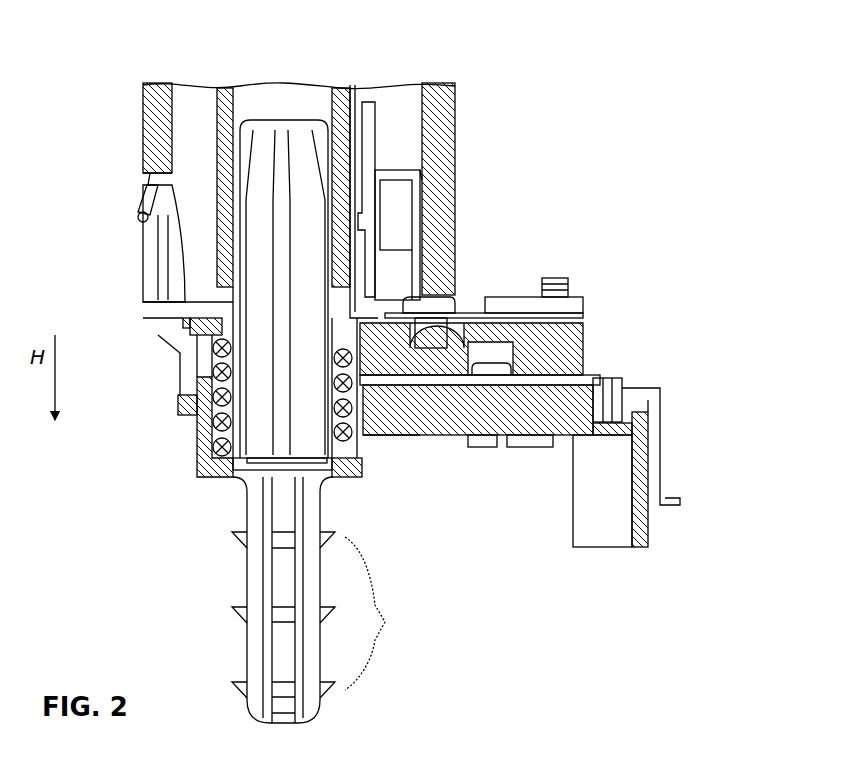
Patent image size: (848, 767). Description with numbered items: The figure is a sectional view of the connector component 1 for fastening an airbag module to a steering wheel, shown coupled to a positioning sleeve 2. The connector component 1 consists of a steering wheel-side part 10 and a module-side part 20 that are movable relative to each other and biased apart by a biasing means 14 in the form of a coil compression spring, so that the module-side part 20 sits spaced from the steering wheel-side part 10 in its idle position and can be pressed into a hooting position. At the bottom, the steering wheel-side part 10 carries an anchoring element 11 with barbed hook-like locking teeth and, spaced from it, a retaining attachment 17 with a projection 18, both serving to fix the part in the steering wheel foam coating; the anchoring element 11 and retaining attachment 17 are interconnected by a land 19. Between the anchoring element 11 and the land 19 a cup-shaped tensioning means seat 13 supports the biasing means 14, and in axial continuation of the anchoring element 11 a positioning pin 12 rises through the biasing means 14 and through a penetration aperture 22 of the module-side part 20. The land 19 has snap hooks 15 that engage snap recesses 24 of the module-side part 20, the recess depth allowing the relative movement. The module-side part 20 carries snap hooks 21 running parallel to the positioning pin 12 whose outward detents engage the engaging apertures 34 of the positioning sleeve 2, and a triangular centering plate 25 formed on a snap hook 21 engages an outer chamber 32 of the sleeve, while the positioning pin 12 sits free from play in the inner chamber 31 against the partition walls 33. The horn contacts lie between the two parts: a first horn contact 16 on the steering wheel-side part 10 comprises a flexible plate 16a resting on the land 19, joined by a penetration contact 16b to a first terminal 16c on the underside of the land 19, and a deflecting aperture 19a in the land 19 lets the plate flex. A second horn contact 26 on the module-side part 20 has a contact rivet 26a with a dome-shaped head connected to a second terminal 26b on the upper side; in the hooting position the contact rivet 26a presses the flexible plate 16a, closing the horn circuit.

The connector component 1 is at (737, 230).
The positioning sleeve 2 is at (492, 92).
The steering wheel-side part 10 is at (655, 430).
The anchoring element 11 is at (268, 582).
The positioning pin 12 is at (303, 147).
The tensioning means seat 13 is at (365, 478).
The biasing means 14 is at (210, 428).
The snap hooks 15 is at (495, 352).
The first horn contact 16 is at (691, 397).
The flexible plate 16a is at (470, 398).
The penetration contact 16b is at (612, 385).
The first terminal 16c is at (545, 432).
The retaining attachment 17 is at (640, 547).
The projection 18 is at (648, 535).
The land 19 is at (518, 432).
The deflecting aperture 19a is at (432, 432).
The module-side part 20 is at (172, 333).
The snap hooks 21 is at (150, 217).
The penetration aperture 22 is at (183, 320).
The snap recesses 24 is at (545, 350).
The centering plate 25 is at (372, 138).
The second horn contact 26 is at (513, 298).
The contact rivet 26a is at (425, 327).
The second terminal 26b is at (520, 293).
The inner chamber 31 is at (277, 103).
The outer chambers 32 is at (180, 113).
The partition walls 33 is at (230, 92).
The engaging apertures 34 is at (150, 180).